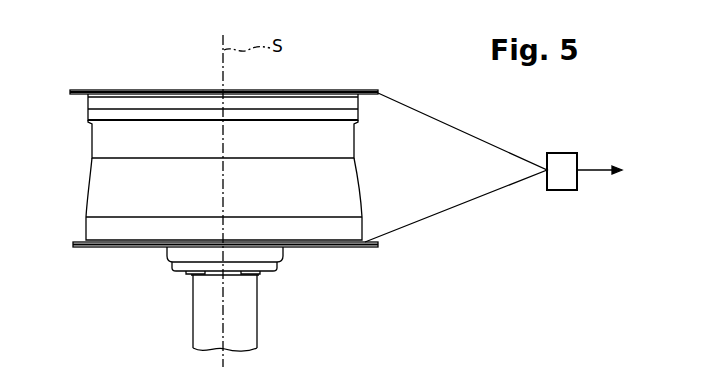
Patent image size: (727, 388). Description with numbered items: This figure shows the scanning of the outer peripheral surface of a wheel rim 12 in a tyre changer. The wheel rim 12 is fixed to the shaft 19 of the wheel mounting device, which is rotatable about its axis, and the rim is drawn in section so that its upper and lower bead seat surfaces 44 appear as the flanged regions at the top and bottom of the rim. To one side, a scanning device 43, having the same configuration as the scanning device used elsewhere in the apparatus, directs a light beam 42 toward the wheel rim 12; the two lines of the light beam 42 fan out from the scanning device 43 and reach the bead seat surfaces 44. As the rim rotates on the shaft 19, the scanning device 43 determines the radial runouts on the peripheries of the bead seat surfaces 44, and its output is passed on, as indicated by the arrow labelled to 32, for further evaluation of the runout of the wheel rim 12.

The wheel rim 12 is at (168, 90).
The bead seat surfaces 44 is at (86, 104).
The shaft 19 is at (248, 320).
The light beam 42 is at (458, 131).
The scanning device 43 is at (559, 165).
The control unit 32 is at (623, 171).